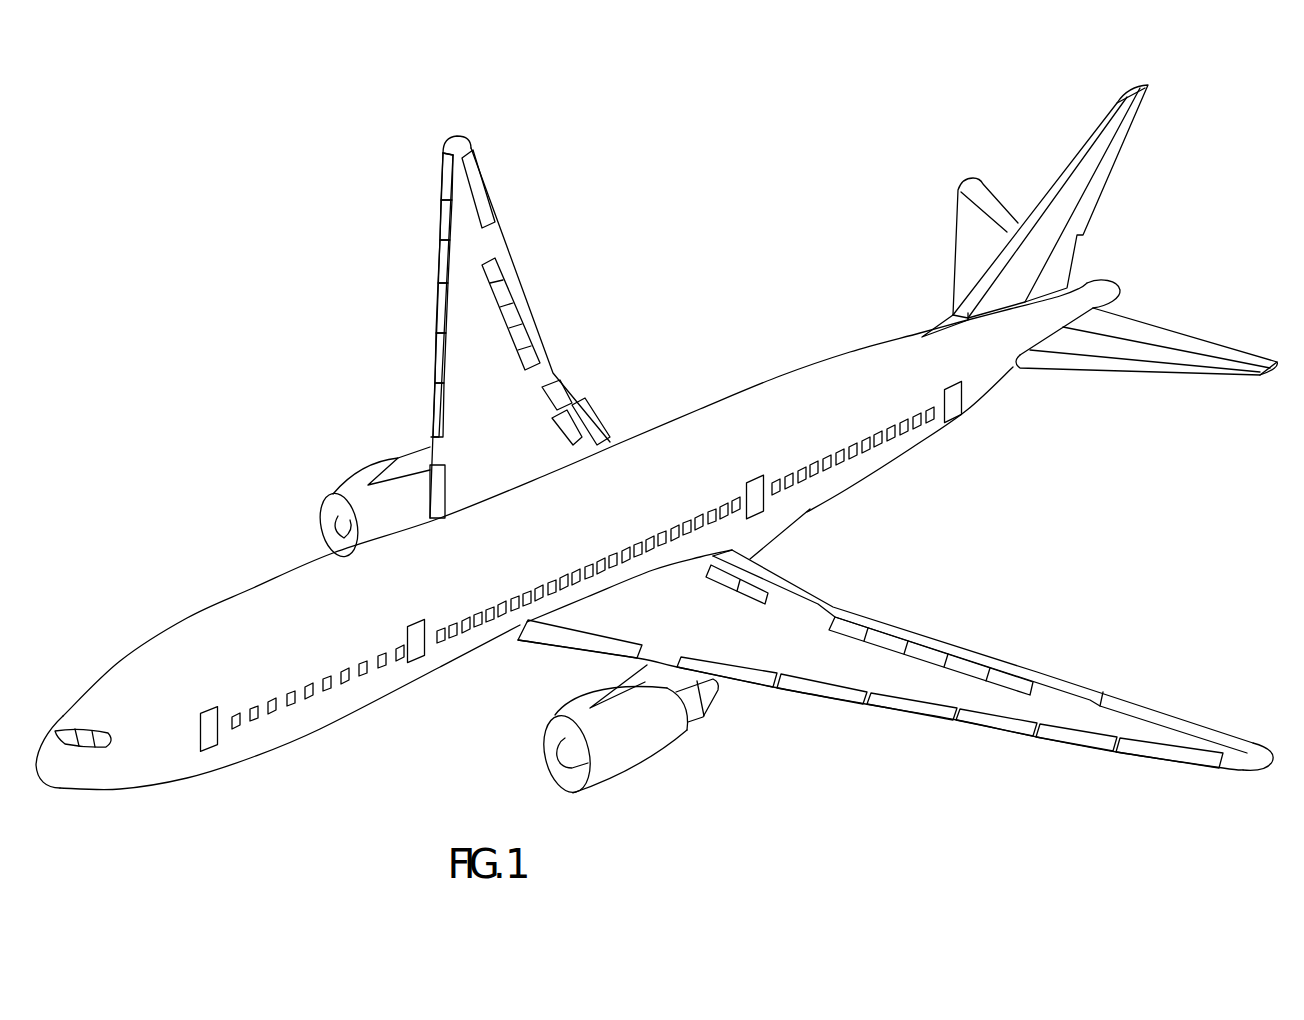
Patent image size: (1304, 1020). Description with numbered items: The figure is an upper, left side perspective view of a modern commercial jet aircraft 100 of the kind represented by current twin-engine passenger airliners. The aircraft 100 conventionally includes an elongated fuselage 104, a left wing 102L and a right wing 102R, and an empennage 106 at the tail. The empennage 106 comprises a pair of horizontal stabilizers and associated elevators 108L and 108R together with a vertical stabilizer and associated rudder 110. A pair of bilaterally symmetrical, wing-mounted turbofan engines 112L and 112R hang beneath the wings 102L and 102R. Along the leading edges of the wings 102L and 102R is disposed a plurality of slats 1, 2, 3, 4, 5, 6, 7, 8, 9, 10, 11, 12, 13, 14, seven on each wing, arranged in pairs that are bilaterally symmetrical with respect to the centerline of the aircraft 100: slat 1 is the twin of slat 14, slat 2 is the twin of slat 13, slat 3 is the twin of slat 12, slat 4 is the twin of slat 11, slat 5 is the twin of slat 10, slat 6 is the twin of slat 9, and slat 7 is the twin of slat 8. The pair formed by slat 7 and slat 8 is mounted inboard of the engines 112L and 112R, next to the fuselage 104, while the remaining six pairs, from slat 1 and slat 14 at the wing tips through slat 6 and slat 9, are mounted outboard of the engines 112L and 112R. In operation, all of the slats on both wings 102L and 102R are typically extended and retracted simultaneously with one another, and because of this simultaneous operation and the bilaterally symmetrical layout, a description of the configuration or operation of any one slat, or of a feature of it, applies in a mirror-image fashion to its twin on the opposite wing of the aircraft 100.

The commercial jet aircraft 100 is at (297, 348).
The left wing 102L is at (942, 639).
The right wing 102R is at (532, 312).
The fuselage 104 is at (322, 708).
The empennage 106 is at (937, 113).
The left horizontal stabilizer and associated elevator 108L is at (1147, 347).
The right horizontal stabilizer and associated elevator 108R is at (975, 240).
The vertical stabilizer and associated rudder 110 is at (1100, 148).
The left turbofan engine 112L is at (630, 763).
The right turbofan engine 112R is at (348, 486).
The slat 1 is at (1165, 760).
The slat 2 is at (1080, 746).
The slat 3 is at (1000, 733).
The slat 4 is at (911, 716).
The slat 5 is at (828, 700).
The slat 6 is at (757, 687).
The slat 7 is at (571, 652).
The slat 8 is at (430, 496).
The slat 9 is at (433, 418).
The slat 10 is at (437, 370).
The slat 11 is at (438, 313).
The slat 12 is at (440, 265).
The slat 13 is at (441, 223).
The slat 14 is at (442, 181).